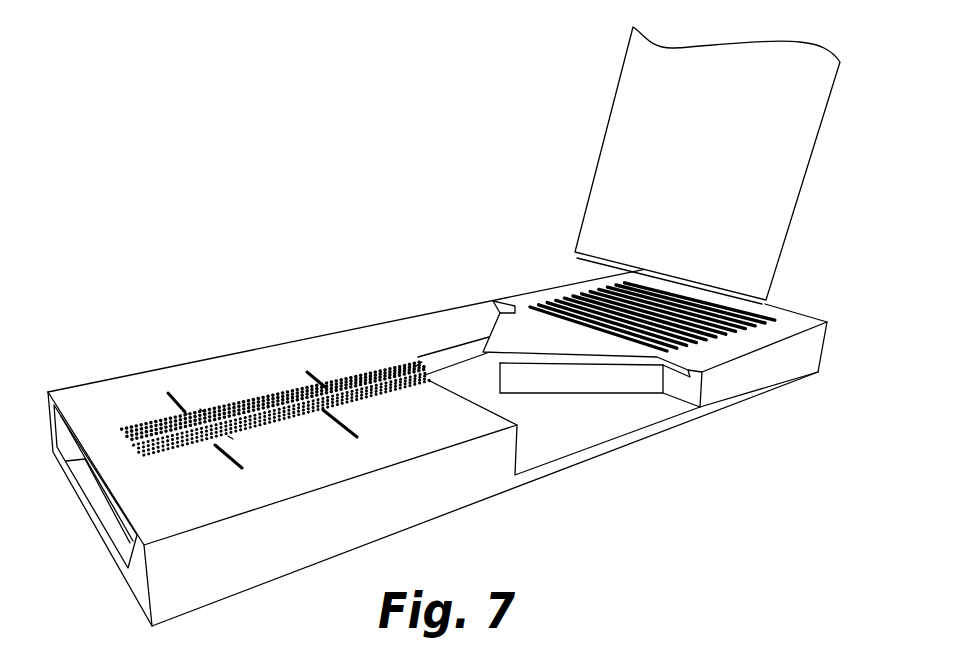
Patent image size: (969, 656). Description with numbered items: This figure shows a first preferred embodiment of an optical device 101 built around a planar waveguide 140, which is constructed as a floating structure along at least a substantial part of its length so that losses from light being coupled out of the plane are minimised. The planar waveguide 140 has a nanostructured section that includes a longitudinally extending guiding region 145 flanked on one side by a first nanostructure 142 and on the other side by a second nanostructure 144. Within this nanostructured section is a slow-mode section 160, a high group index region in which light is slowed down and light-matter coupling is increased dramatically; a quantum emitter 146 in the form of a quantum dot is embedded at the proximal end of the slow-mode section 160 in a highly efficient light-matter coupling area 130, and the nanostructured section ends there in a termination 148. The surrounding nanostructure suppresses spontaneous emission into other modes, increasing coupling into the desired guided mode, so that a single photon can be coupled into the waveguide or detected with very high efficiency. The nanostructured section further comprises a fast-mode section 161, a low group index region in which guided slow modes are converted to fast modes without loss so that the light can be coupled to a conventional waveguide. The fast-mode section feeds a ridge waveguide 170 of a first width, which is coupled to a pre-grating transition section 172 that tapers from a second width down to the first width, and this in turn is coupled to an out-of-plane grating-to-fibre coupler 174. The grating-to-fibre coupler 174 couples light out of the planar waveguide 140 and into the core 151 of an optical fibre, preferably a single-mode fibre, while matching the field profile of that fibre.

The optical device 101 is at (312, 221).
The light-matter coupling area 130 is at (200, 422).
The planar waveguide 140 is at (276, 317).
The first nanostructure 142 is at (317, 382).
The second nanostructure 144 is at (230, 437).
The guiding region 145 is at (416, 367).
The quantum emitter 146 is at (202, 410).
The termination 148 is at (185, 412).
The core of an optical fibre 151 is at (607, 105).
The slow-mode section 160 is at (240, 402).
The fast-mode section 161 is at (337, 370).
The ridge waveguide 170 is at (455, 350).
The pre-grating transition section 172 is at (530, 330).
The grating-to-fibre coupler 174 is at (575, 295).